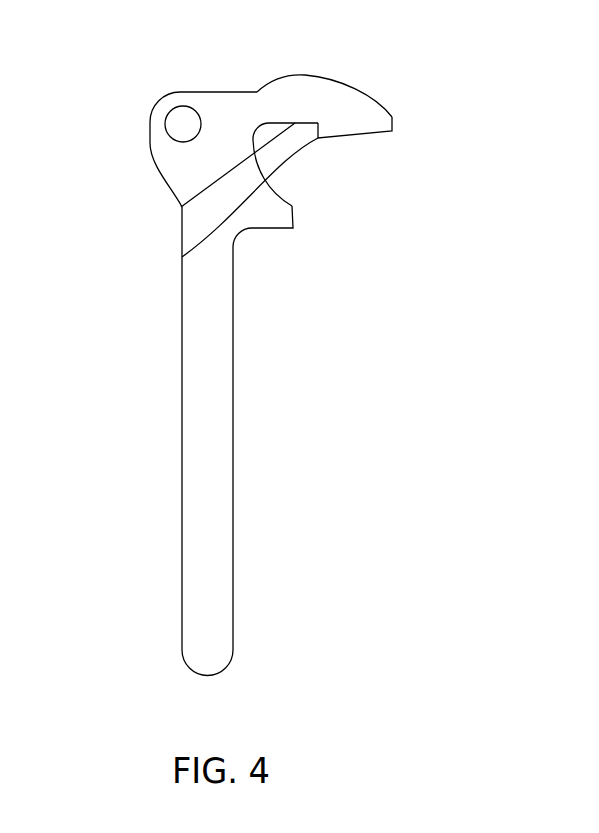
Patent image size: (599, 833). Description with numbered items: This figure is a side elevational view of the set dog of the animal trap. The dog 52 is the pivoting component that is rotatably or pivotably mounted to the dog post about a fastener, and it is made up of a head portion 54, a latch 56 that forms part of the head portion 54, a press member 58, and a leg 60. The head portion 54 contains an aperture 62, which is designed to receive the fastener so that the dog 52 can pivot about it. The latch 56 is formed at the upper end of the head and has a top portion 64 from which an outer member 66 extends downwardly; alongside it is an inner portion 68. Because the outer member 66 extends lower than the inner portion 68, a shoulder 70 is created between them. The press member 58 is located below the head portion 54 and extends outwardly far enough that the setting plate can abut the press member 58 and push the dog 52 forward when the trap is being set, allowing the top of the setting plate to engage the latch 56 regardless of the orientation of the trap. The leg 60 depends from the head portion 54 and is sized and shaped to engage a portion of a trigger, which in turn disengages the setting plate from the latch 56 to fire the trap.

The dog 52 is at (315, 380).
The head portion 54 is at (222, 108).
The latch 56 is at (338, 107).
The press member 58 is at (282, 215).
The leg 60 is at (210, 492).
The aperture 62 is at (183, 124).
The top portion 64 is at (308, 93).
The outer member 66 is at (370, 125).
The inner portion 68 is at (181, 207).
The shoulder 70 is at (182, 257).